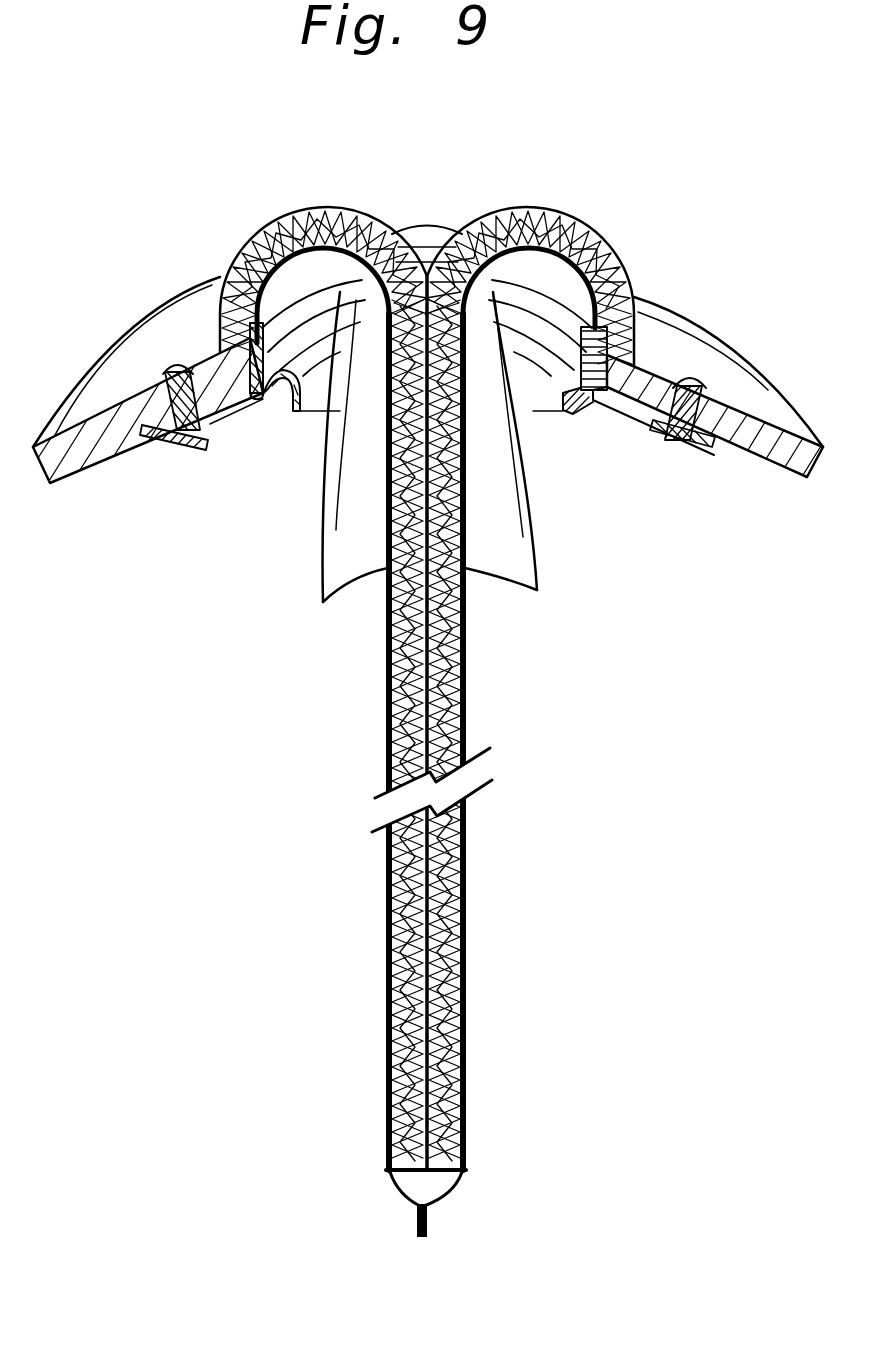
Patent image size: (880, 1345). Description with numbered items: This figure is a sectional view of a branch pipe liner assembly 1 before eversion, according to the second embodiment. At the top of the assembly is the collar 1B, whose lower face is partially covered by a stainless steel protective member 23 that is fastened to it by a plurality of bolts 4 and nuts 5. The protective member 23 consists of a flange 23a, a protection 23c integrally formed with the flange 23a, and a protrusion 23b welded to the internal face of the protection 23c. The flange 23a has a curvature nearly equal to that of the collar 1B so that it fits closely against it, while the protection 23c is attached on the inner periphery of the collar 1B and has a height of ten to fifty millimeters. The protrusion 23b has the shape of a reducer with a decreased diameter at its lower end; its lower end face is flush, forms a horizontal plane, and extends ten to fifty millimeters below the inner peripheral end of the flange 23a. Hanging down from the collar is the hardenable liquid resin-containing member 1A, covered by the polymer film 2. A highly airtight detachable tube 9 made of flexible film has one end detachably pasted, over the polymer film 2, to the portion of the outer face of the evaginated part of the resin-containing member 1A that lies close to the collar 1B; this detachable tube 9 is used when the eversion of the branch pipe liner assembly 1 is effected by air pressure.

The branch pipe liner assembly 1 is at (592, 210).
The hardenable liquid resin-containing member 1A is at (464, 700).
The collar 1B is at (780, 453).
The polymer film 2 is at (388, 712).
The bolt 4 is at (163, 370).
The nut 5 is at (177, 442).
The detachable tube 9 is at (542, 587).
The protective member 23 is at (257, 408).
The flange 23a is at (632, 415).
The protrusion 23b is at (565, 415).
The protection 23c is at (638, 300).